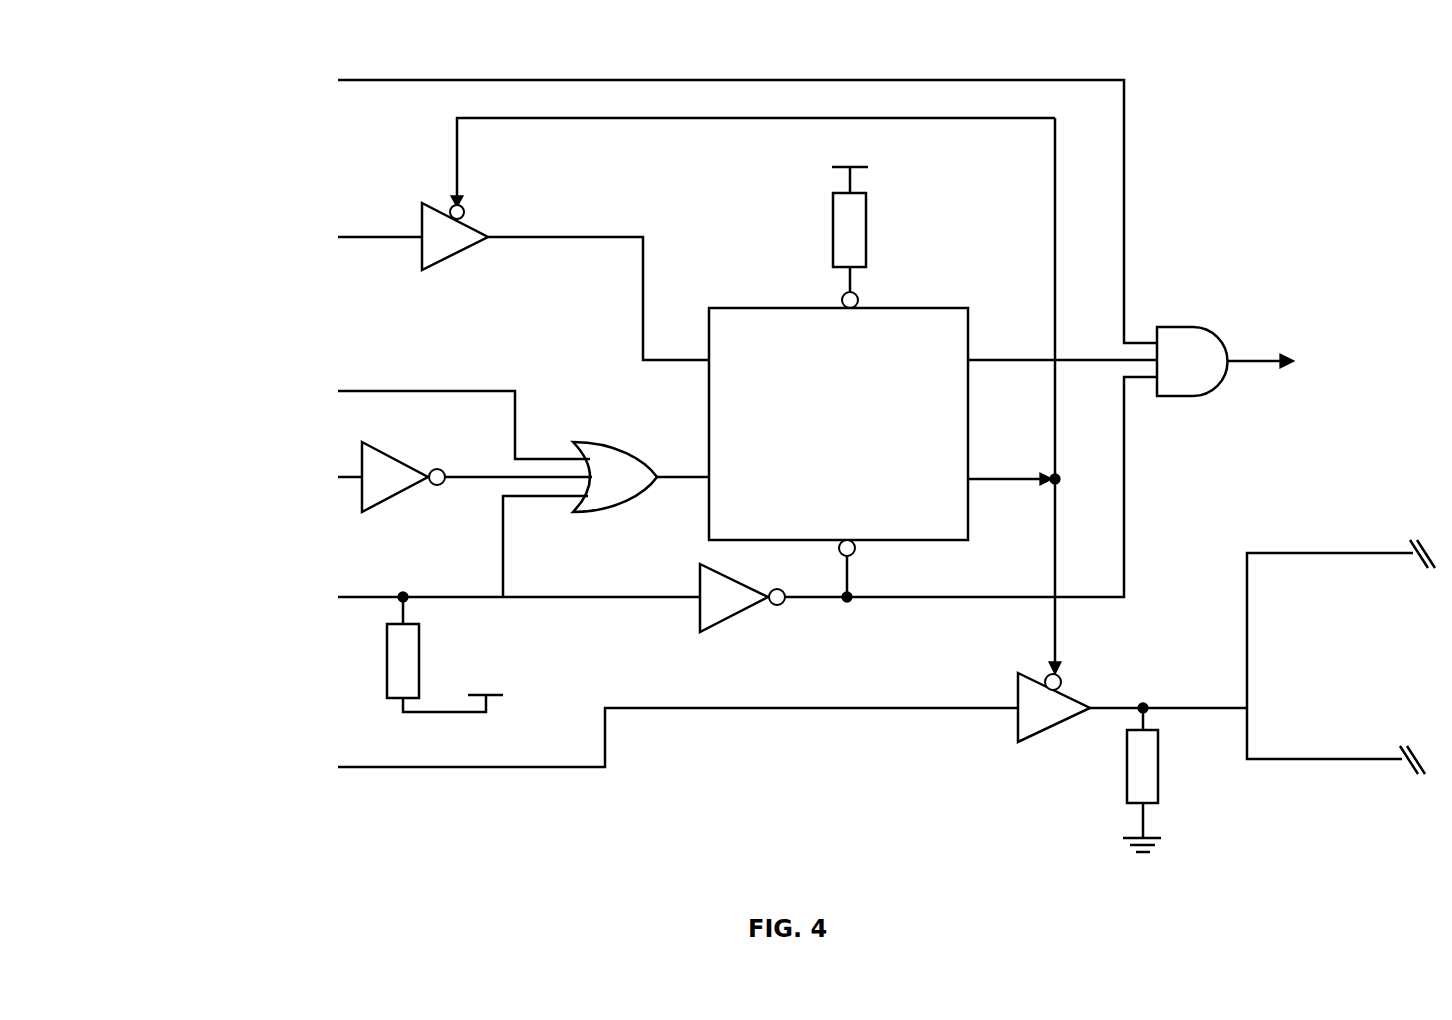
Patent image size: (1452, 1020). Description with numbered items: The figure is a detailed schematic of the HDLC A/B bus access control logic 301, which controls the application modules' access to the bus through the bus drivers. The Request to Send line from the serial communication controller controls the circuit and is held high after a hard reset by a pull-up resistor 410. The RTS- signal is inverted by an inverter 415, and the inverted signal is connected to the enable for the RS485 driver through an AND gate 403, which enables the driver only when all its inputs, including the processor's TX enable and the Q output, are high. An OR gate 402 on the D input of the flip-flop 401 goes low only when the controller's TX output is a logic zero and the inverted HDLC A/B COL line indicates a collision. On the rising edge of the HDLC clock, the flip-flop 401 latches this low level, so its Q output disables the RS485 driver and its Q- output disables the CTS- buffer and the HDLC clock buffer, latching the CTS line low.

The HDLC A/B bus access control logic 301 is at (830, 884).
The flip-flop 401 is at (933, 308).
The OR gate 402 is at (590, 442).
The AND gate 403 is at (1170, 327).
The pull-up resistor 410 is at (387, 650).
The inverter 415 is at (728, 617).